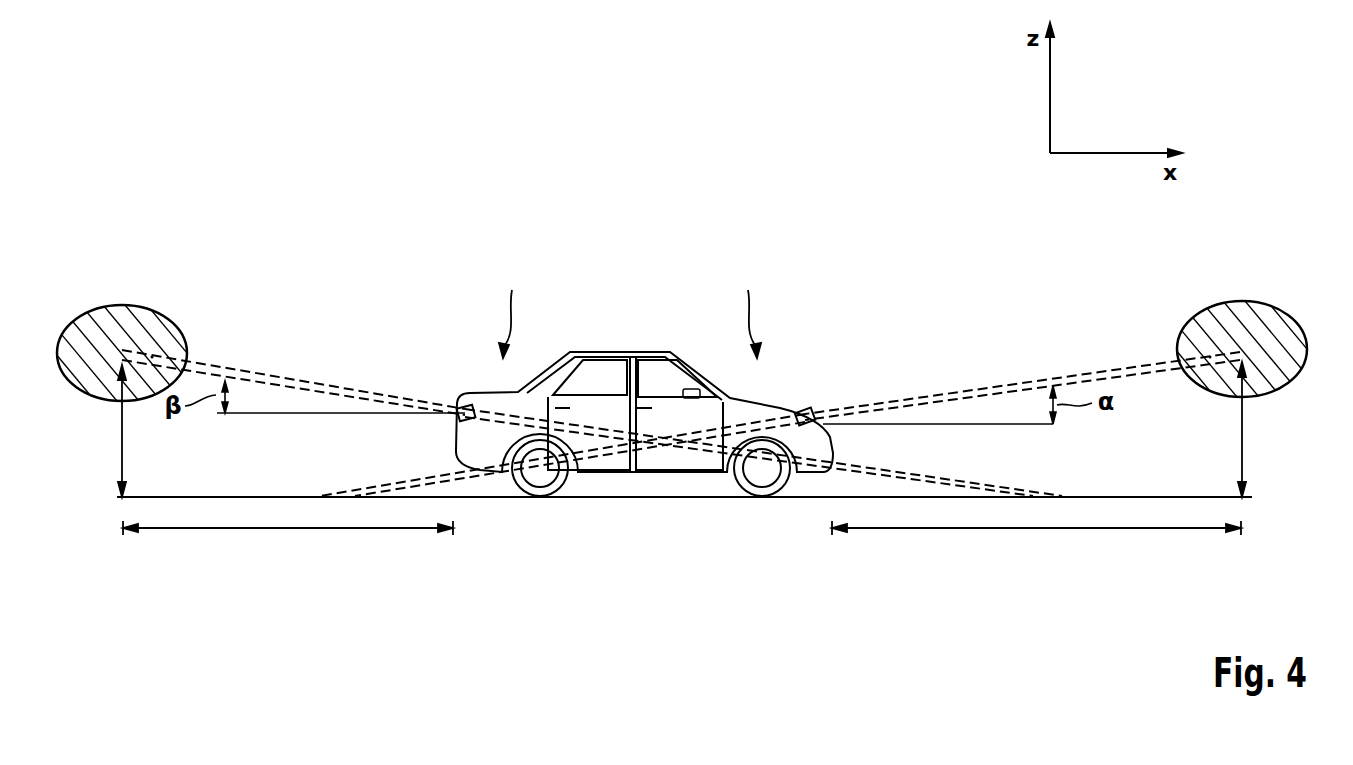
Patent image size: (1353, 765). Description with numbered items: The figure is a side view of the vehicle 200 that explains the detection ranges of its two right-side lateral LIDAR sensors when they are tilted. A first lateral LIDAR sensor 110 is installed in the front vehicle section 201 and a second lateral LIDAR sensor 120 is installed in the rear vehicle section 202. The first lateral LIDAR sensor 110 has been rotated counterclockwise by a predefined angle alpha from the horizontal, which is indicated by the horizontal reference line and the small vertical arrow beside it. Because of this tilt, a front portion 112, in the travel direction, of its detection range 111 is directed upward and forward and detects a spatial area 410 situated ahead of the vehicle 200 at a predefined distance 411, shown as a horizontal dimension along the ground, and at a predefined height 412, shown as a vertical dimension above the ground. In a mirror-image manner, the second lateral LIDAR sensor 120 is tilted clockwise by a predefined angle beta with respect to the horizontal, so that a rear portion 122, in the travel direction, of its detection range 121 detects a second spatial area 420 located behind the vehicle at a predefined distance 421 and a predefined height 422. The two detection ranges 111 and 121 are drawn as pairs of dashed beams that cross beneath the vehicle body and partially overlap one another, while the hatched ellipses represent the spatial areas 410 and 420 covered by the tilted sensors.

The first lateral LIDAR sensor 110 is at (806, 407).
The first lateral detection range 111 is at (940, 385).
The front portion of detection range 112 is at (1210, 357).
The second lateral LIDAR sensor 120 is at (466, 404).
The second lateral detection range 121 is at (259, 370).
The rear portion of detection range 122 is at (153, 357).
The vehicle 200 is at (608, 370).
The front vehicle section 201 is at (747, 311).
The rear vehicle section 202 is at (513, 311).
The spatial area 410 is at (1258, 312).
The predefined distance 411 is at (1038, 530).
The predefined height 412 is at (1244, 432).
The second spatial area 420 is at (110, 312).
The predefined distance 421 is at (290, 530).
The predefined height 422 is at (120, 433).